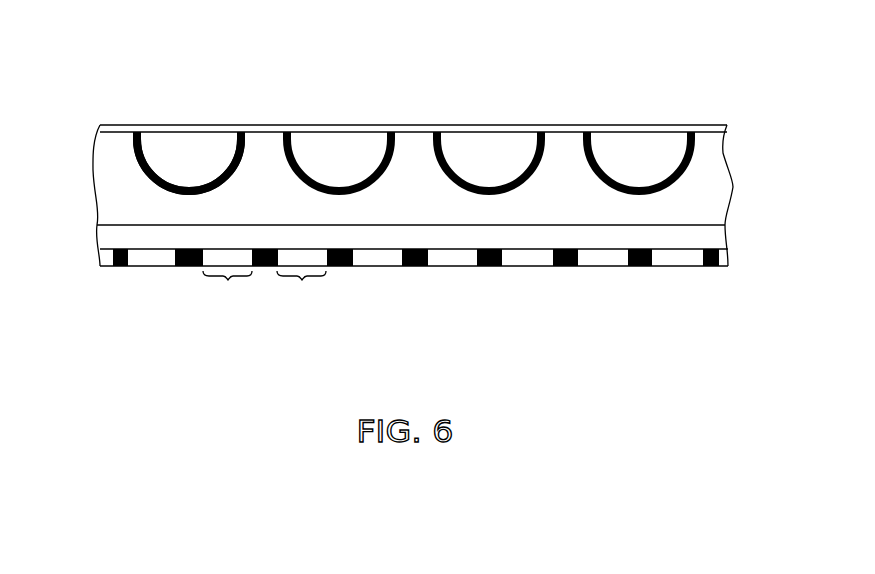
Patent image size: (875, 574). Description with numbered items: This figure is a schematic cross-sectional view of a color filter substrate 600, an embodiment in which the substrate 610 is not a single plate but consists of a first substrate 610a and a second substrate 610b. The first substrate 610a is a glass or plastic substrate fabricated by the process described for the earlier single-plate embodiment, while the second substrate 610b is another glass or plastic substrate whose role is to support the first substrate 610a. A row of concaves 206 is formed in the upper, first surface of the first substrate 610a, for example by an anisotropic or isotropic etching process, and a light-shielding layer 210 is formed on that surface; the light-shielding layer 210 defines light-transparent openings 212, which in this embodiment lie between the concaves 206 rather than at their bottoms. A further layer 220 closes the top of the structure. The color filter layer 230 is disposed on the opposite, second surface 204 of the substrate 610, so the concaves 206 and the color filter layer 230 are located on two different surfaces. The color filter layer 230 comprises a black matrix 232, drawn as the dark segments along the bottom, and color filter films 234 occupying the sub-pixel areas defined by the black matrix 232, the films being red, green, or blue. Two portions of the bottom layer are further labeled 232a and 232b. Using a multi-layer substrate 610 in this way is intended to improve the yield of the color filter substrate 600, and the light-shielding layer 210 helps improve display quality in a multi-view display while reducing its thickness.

The color filter substrate 600 is at (462, 218).
The cover plate 220 is at (727, 126).
The light-transparent openings 212 is at (411, 127).
The light-shielding layer 210 is at (690, 162).
The concaves 206 is at (191, 160).
The substrate 610 is at (464, 217).
The first substrate 610a is at (712, 202).
The second substrate 610b is at (712, 237).
The color filter layer 230 is at (422, 295).
The second surface 204 is at (527, 254).
The black matrix 232 is at (710, 265).
The color filter films 234 is at (672, 256).
The first light-shielding portion 232a is at (227, 286).
The second light-shielding portion 232b is at (304, 286).